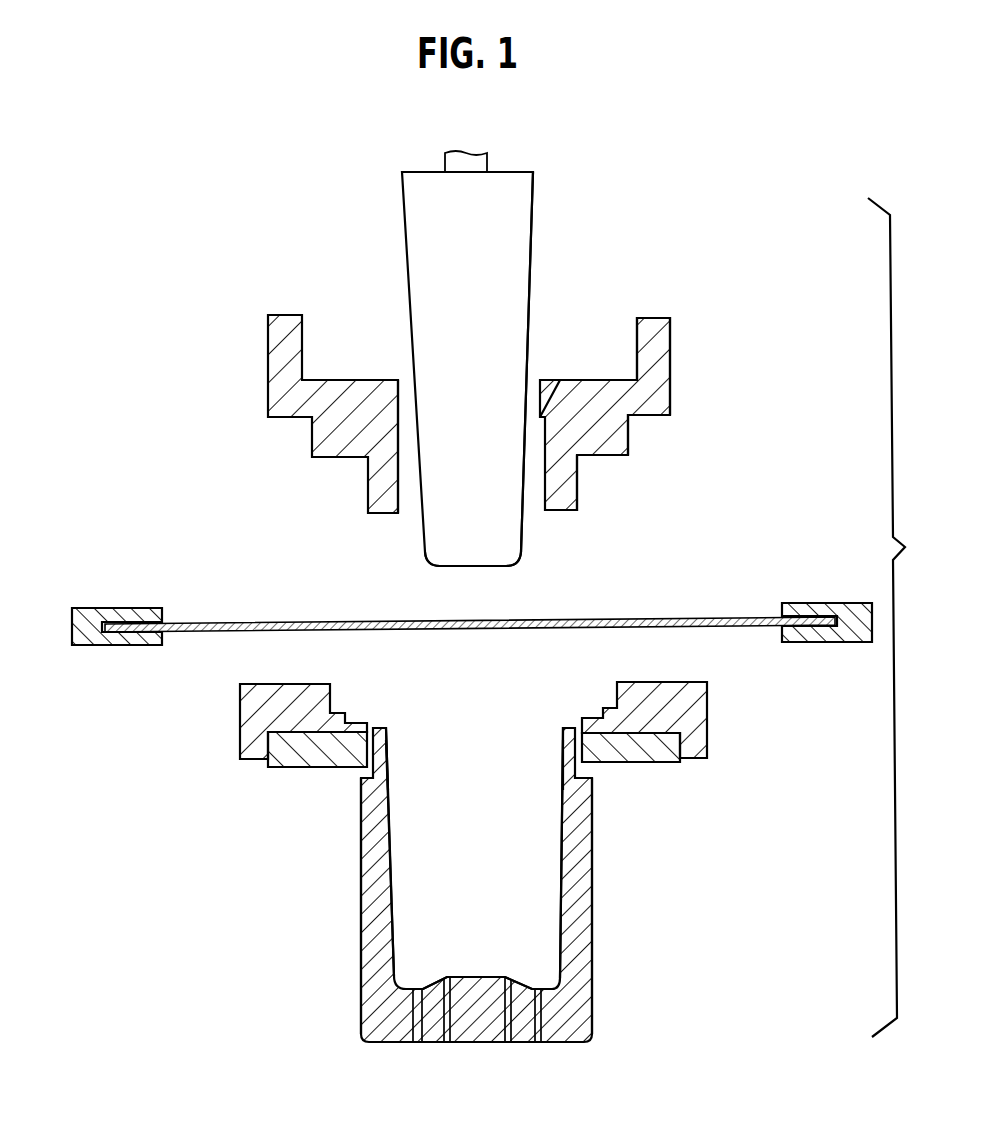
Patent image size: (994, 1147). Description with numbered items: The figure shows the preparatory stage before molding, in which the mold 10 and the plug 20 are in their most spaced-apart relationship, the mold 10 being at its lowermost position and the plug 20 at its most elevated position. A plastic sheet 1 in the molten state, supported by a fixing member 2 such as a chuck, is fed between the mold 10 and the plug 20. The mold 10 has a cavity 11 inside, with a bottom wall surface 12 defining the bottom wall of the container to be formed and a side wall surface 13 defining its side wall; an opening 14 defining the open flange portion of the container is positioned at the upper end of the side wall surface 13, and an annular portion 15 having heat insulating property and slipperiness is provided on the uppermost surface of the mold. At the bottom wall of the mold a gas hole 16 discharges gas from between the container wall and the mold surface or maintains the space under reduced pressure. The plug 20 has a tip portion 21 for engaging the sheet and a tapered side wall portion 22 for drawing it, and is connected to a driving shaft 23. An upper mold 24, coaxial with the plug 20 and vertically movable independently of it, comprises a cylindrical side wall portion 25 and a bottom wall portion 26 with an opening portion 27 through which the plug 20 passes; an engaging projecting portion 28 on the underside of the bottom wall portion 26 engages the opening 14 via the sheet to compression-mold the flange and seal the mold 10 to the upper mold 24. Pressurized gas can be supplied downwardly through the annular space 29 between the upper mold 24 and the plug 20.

The plastic sheet 1 is at (628, 620).
The fixing member 2 is at (832, 605).
The mold 10 is at (501, 892).
The cavity 11 is at (488, 853).
The bottom wall surface 12 is at (475, 977).
The side wall surface 13 is at (395, 871).
The opening 14 is at (384, 727).
The annular portion 15 is at (262, 684).
The gas hole 16 is at (552, 1027).
The plug 20 is at (530, 368).
The tip portion 21 is at (488, 569).
The tapered side wall portion 22 is at (531, 306).
The driving shaft 23 is at (489, 164).
The upper mold 24 is at (502, 414).
The cylindrical side wall portion 25 is at (661, 353).
The bottom wall portion 26 is at (620, 404).
The opening portion 27 is at (538, 393).
The engaging projecting portion 28 is at (563, 483).
The annular space 29 is at (407, 395).